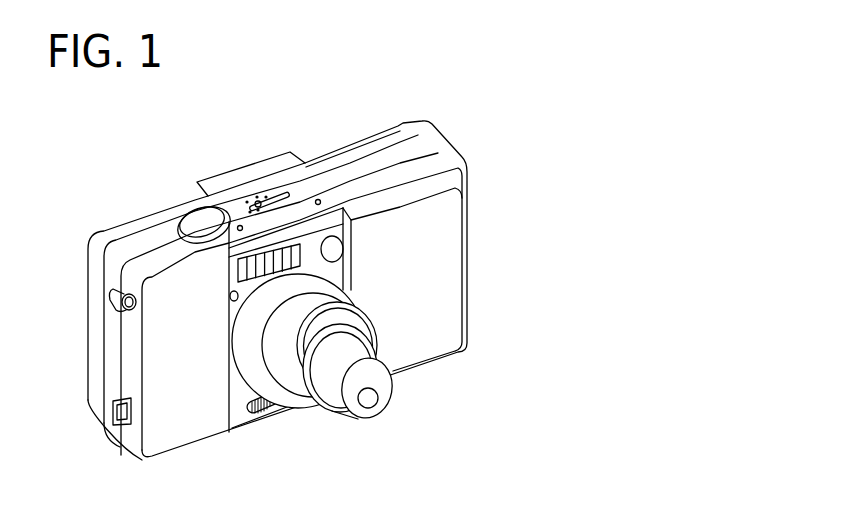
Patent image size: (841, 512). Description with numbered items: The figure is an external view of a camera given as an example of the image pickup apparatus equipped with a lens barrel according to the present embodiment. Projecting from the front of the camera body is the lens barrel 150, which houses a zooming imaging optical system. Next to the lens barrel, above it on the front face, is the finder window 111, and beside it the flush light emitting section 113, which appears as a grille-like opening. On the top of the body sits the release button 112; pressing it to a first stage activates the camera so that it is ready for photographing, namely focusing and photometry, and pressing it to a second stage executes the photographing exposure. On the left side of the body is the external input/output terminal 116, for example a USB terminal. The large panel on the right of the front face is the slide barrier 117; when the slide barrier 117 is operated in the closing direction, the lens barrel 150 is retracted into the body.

The finder window 111 is at (340, 244).
The release button 112 is at (192, 219).
The flush light emitting section 113 is at (293, 247).
The external input/output terminal 116 is at (112, 412).
The slide barrier 117 is at (447, 311).
The lens barrel 150 is at (292, 369).